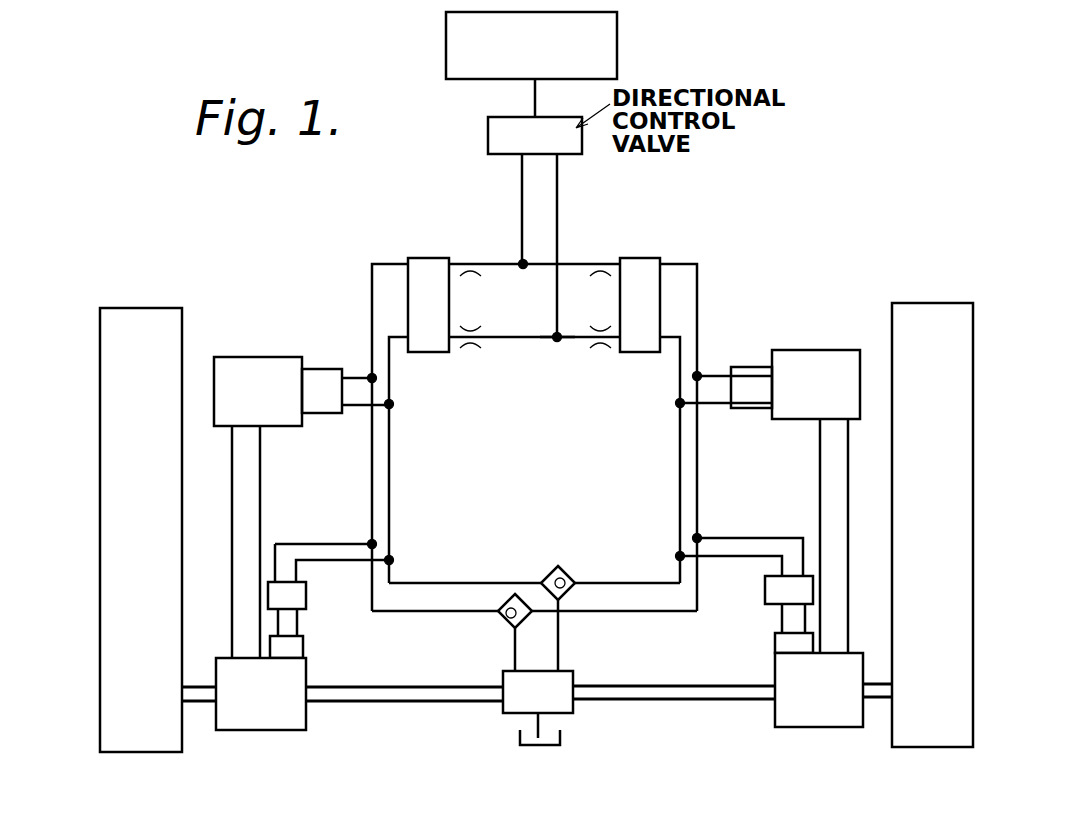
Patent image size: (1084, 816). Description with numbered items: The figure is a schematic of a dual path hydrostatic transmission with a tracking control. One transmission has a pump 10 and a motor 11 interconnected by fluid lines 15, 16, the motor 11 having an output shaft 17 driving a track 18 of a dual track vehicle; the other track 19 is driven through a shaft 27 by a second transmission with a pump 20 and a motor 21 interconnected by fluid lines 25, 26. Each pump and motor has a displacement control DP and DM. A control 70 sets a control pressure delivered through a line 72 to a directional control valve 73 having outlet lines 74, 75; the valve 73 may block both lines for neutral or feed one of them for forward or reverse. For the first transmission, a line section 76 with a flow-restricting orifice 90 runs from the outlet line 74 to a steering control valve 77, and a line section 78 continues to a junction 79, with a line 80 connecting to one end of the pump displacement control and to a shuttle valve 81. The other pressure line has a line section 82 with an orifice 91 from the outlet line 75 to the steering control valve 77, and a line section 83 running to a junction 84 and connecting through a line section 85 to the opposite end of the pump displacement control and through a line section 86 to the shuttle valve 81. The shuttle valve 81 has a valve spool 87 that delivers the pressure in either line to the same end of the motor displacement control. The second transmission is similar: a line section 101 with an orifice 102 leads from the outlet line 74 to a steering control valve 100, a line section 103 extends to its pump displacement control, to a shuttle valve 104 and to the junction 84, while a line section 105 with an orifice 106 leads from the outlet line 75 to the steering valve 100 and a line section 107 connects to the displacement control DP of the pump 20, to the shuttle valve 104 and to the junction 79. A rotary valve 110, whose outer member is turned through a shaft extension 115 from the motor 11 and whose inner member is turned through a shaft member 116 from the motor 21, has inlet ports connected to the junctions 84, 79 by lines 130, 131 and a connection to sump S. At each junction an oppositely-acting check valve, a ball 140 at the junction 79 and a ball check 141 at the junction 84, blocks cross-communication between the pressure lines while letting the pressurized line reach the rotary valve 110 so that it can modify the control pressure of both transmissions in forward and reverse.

The pump 10 is at (256, 348).
The motor 11 is at (278, 742).
The fluid line 15 is at (231, 500).
The fluid line 16 is at (278, 488).
The shaft 17 is at (203, 705).
The track 18 is at (162, 752).
The track 19 is at (928, 748).
The pump 20 is at (832, 327).
The motor 21 is at (801, 740).
The fluid line 25 is at (819, 480).
The fluid line 26 is at (850, 482).
The shaft 27 is at (880, 700).
The control 70 is at (624, 46).
The line 72 is at (532, 100).
The directional control valve 73 is at (486, 133).
The outlet line 74 is at (520, 176).
The outlet line 75 is at (559, 176).
The line section 76 is at (507, 262).
The steering control valve 77 is at (410, 258).
The line section 78 is at (371, 268).
The junction 79 is at (551, 568).
The line 80 is at (355, 376).
The shuttle valve 81 is at (308, 600).
The line section 82 is at (503, 336).
The line section 83 is at (393, 478).
The junction 84 is at (510, 628).
The line section 85 is at (354, 408).
The line section 86 is at (358, 562).
The valve spool 87 is at (277, 620).
The flow-restricting orifice 90 is at (476, 250).
The flow-restricting orifice 91 is at (466, 350).
The steering control valve 100 is at (655, 258).
The line section 101 is at (572, 262).
The orifice 102 is at (612, 259).
The line section 103 is at (700, 284).
The shuttle valve 104 is at (770, 590).
The line section 105 is at (572, 342).
The orifice 106 is at (597, 350).
The line section 107 is at (678, 470).
The rotary valve 110 is at (586, 716).
The shaft extension 115 is at (433, 692).
The shaft member 116 is at (688, 690).
The line 130 is at (516, 647).
The line 131 is at (560, 658).
The ball 140 is at (570, 572).
The ball check 141 is at (506, 622).
The pump displacement control DP is at (318, 376).
The motor displacement control DM is at (305, 645).
The sump S is at (542, 748).